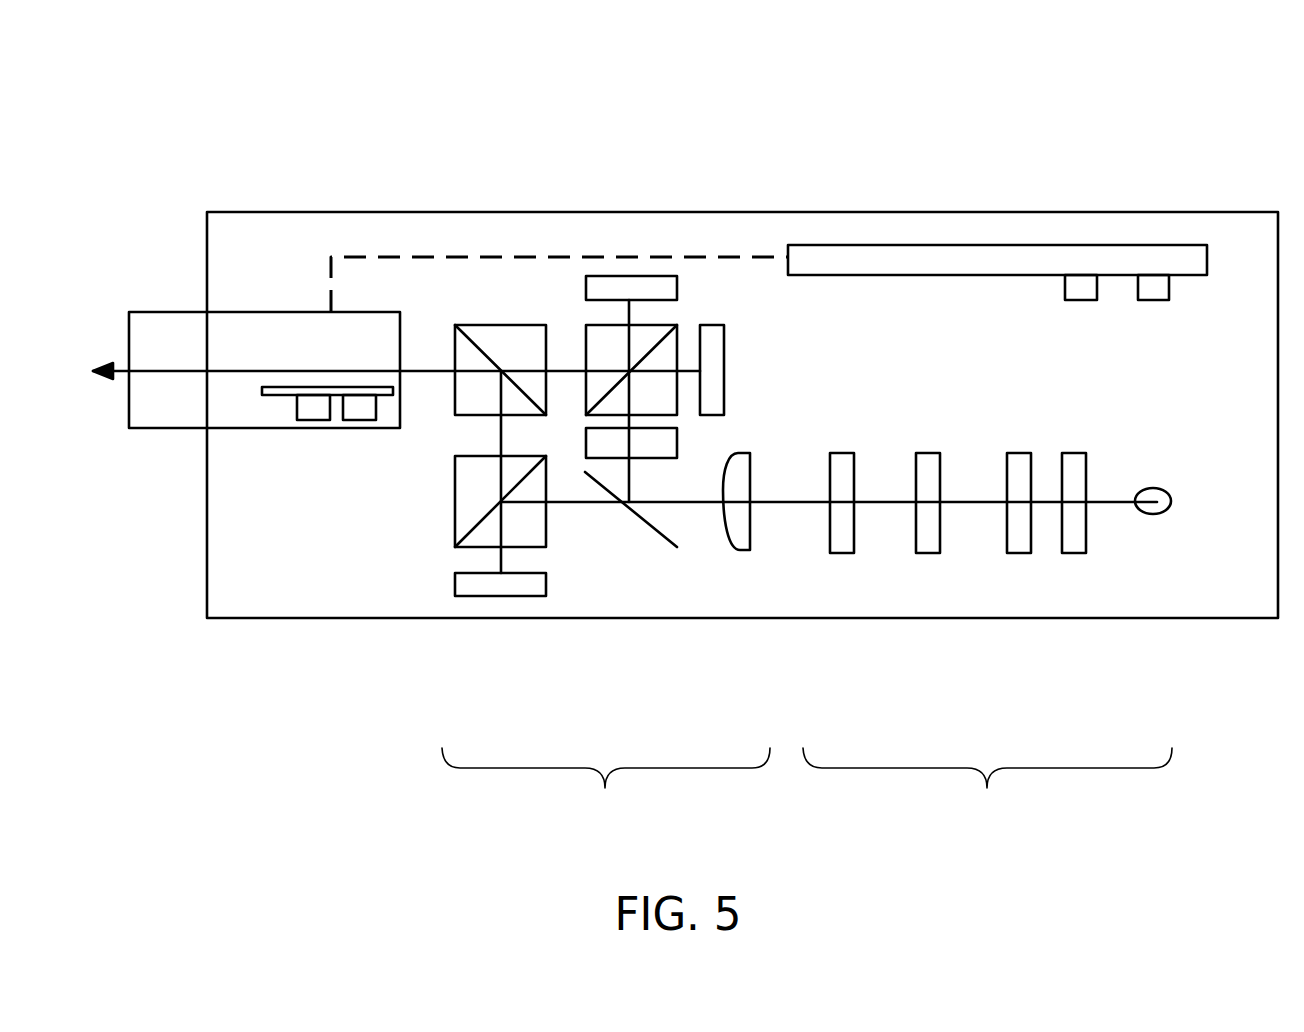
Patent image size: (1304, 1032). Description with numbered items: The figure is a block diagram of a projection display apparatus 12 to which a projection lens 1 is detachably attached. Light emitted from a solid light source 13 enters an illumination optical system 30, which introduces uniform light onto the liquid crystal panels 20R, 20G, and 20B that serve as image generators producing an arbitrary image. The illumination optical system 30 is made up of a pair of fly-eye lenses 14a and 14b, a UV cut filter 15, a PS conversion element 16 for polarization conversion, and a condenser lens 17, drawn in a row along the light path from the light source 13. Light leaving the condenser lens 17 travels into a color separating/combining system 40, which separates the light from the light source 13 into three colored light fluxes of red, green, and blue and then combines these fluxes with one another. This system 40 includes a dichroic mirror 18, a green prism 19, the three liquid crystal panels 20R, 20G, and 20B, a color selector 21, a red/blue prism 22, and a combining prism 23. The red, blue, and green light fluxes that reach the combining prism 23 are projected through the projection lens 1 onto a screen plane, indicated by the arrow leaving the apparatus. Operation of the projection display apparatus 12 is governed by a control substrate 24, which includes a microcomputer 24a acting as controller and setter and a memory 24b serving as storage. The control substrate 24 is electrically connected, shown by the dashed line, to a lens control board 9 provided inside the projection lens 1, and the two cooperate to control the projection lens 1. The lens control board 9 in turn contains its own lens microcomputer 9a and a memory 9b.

The projection lens 1 is at (165, 343).
The lens control board 9 is at (272, 390).
The lens microcomputer 9a is at (322, 418).
The memory 9b is at (362, 417).
The projection display apparatus 12 is at (286, 215).
The light source 13 is at (1153, 514).
The fly-eye lens 14a is at (1072, 547).
The fly-eye lens 14b is at (1023, 548).
The UV cut filter 15 is at (928, 547).
The PS conversion element 16 is at (842, 547).
The condenser lens 17 is at (737, 552).
The dichroic mirror 18 is at (670, 540).
The green prism 19 is at (538, 527).
The liquid crystal panel 20G is at (487, 597).
The liquid crystal panel 20B is at (617, 275).
The liquid crystal panel 20R is at (710, 340).
The color selector 21 is at (660, 452).
The red/blue prism 22 is at (638, 342).
The combining prism 23 is at (510, 342).
The control substrate 24 is at (1188, 258).
The microcomputer 24a is at (1080, 285).
The memory 24b is at (1157, 285).
The illumination optical system 30 is at (987, 795).
The color separating/combining system 40 is at (606, 795).